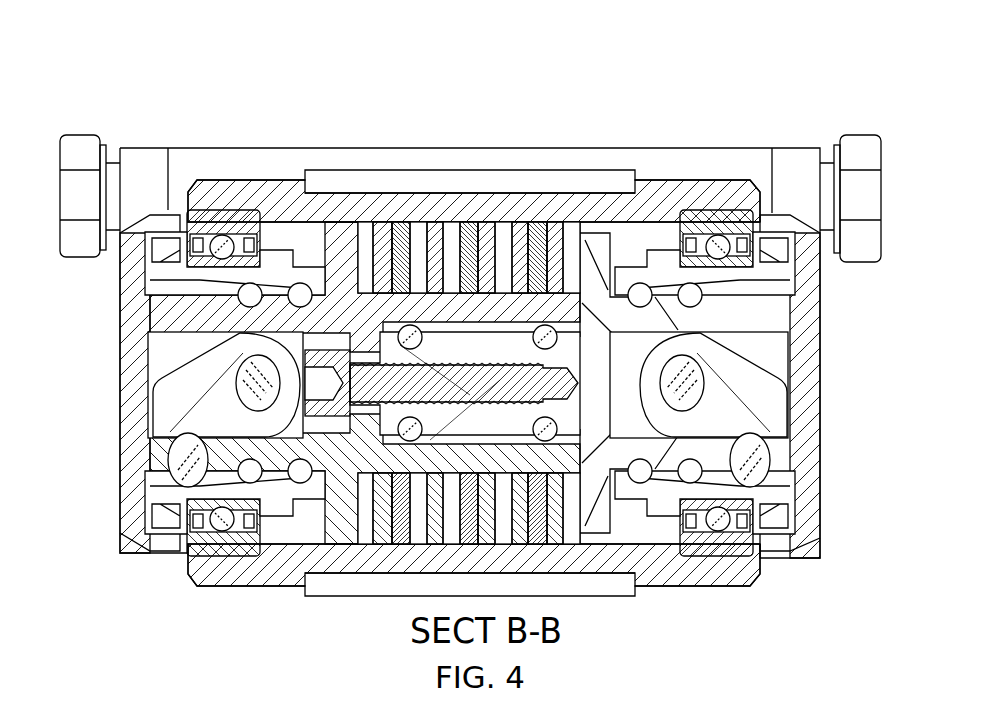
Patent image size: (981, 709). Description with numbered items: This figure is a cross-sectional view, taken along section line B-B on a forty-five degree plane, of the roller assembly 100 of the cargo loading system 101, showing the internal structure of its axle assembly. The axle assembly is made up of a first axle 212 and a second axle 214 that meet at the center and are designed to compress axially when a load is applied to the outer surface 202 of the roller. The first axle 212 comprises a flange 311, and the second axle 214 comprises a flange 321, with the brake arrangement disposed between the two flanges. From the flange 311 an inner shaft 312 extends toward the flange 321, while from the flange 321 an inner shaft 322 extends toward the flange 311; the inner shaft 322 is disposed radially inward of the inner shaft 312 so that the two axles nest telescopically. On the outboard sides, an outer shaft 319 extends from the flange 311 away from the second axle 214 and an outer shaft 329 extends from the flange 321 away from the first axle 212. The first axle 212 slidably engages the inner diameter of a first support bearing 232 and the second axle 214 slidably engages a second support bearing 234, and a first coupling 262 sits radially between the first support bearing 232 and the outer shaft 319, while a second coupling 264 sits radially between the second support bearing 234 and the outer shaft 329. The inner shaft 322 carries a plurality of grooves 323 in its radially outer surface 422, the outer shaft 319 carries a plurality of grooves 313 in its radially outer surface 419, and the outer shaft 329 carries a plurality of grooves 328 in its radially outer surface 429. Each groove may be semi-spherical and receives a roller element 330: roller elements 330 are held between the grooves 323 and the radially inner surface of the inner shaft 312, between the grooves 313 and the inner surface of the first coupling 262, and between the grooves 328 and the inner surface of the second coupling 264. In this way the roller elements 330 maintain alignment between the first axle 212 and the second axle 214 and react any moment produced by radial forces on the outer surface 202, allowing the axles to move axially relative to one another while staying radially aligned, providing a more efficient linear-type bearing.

The roller assembly 100 is at (93, 124).
The cargo loading system 101 is at (134, 105).
The outer surface 202 is at (408, 170).
The first axle 212 is at (340, 275).
The second axle 214 is at (597, 247).
The first support bearing 232 is at (197, 547).
The second support bearing 234 is at (733, 548).
The first coupling 262 is at (203, 280).
The second coupling 264 is at (740, 283).
The flange 311 is at (350, 505).
The inner shaft 312 is at (418, 307).
The plurality of grooves 313 is at (250, 295).
The outer shaft 319 is at (247, 448).
The flange 321 is at (595, 478).
The inner shaft 322 is at (495, 420).
The plurality of grooves 323 is at (410, 425).
The plurality of grooves 328 is at (693, 298).
The outer shaft 329 is at (683, 452).
The roller element 330 is at (540, 338).
The radially outer surface 419 is at (278, 470).
The radially outer surface 422 is at (458, 435).
The radially outer surface 429 is at (660, 477).